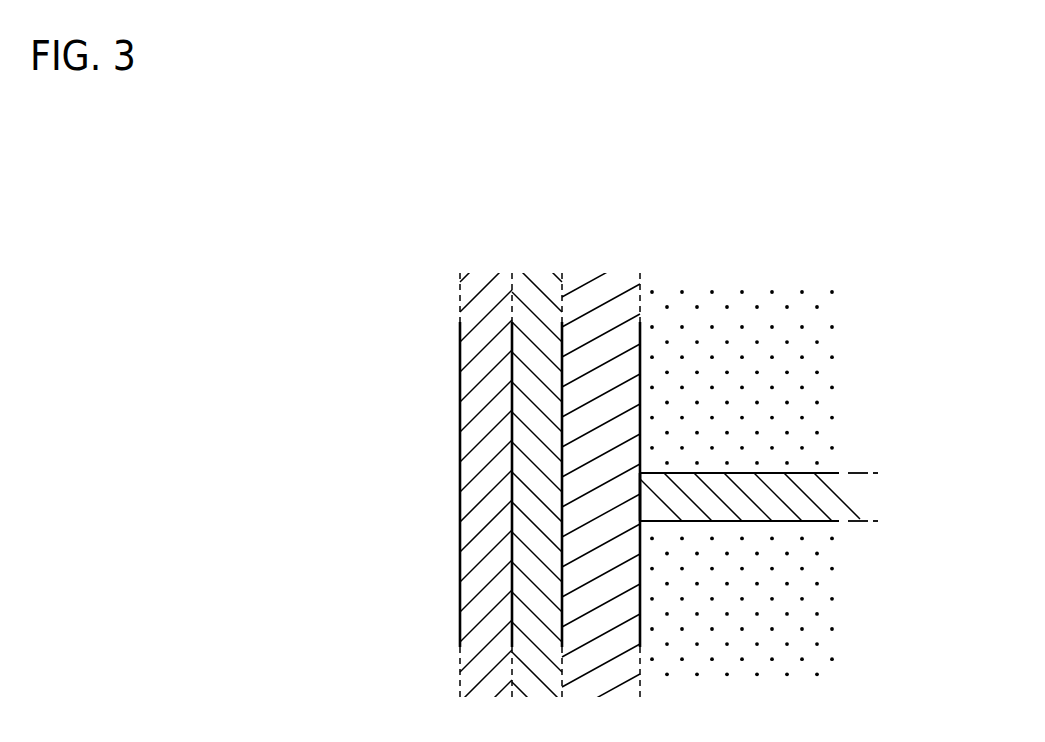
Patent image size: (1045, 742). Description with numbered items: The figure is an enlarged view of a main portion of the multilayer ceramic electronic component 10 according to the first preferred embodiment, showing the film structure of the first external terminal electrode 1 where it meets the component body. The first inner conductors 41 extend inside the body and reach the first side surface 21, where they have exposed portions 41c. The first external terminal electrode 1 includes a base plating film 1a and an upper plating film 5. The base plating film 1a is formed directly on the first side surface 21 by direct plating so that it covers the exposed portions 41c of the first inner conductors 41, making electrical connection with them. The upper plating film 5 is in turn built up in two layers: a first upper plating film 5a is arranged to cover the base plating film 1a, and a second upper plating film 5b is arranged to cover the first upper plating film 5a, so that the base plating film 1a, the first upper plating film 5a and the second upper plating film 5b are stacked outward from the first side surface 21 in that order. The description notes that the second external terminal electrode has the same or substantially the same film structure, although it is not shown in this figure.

The first external terminal electrode 1 is at (247, 450).
The base plating film 1a is at (563, 518).
The upper plating film 5 is at (309, 516).
The first upper plating film 5a is at (512, 560).
The second upper plating film 5b is at (460, 626).
The multilayer ceramic electronic component 10 is at (640, 403).
The first side surface 21 is at (640, 452).
The first inner conductors 41 is at (765, 521).
The exposed portions 41c is at (640, 490).